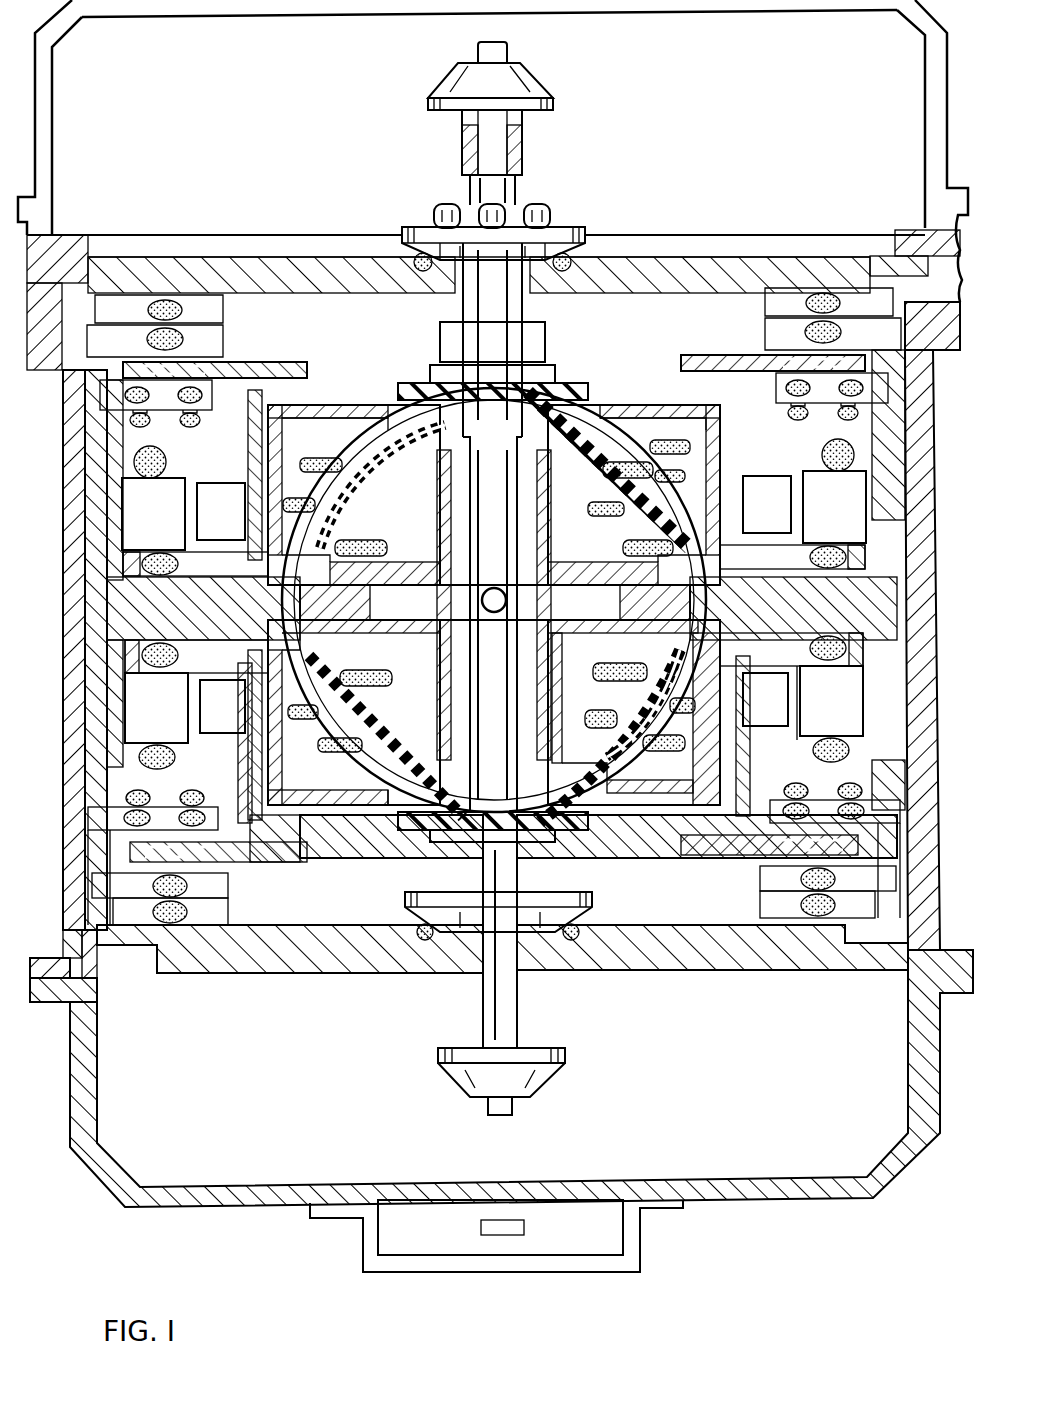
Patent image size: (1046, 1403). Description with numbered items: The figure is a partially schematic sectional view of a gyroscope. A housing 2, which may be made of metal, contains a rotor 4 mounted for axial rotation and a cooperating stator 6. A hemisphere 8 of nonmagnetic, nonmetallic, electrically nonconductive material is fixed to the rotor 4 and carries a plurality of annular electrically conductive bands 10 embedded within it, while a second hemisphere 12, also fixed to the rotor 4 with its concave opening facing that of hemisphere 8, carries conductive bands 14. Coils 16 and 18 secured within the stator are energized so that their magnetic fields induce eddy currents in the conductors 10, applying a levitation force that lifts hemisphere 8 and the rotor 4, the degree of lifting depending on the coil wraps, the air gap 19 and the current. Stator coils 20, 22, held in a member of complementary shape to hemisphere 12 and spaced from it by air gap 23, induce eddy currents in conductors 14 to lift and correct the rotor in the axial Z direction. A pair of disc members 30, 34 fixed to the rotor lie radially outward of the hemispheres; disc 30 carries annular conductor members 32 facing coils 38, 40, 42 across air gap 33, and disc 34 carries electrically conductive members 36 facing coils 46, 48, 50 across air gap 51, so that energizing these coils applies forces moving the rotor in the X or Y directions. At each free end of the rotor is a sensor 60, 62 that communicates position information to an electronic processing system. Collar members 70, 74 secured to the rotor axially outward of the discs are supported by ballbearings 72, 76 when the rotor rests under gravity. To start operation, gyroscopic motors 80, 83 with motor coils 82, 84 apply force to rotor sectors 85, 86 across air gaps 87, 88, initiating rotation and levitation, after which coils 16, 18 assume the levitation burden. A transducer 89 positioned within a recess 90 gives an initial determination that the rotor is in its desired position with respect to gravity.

The housing 2 is at (880, 1200).
The rotor 4 is at (500, 352).
The stator 6 is at (835, 600).
The hemisphere 8 is at (548, 432).
The electrically conductive bands 10 is at (600, 462).
The hemisphere 12 is at (598, 855).
The conductive bands 14 is at (335, 672).
The coil 16 is at (686, 442).
The coil 18 is at (680, 500).
The air gap 19 is at (615, 428).
The stator coil 20 is at (668, 705).
The stator coil 22 is at (634, 712).
The air gap 23 is at (620, 800).
The disc member 30 is at (740, 358).
The annular conductor members 32 is at (160, 364).
The air gap 33 is at (125, 381).
The disc member 34 is at (740, 858).
The electrically conductive members 36 is at (220, 863).
The coil 38 is at (193, 418).
The coil 40 is at (150, 412).
The coil 42 is at (180, 330).
The coil 46 is at (188, 913).
The coil 48 is at (195, 791).
The coil 50 is at (140, 791).
The air gap 51 is at (125, 821).
The sensor 60 is at (509, 94).
The sensor 62 is at (522, 1093).
The collar member 70 is at (436, 212).
The ballbearings 72 is at (402, 235).
The collar member 74 is at (405, 900).
The ballbearings 76 is at (425, 942).
The gyroscopic motor 80 is at (170, 723).
The motor coil 82 is at (175, 653).
The gyroscopic motor 83 is at (170, 537).
The motor coil 84 is at (166, 462).
The rotor sector 85 is at (238, 533).
The rotor sector 86 is at (245, 718).
The air gap 87 is at (200, 553).
The air gap 88 is at (797, 728).
The transducer 89 is at (524, 1228).
The recess 90 is at (432, 1212).